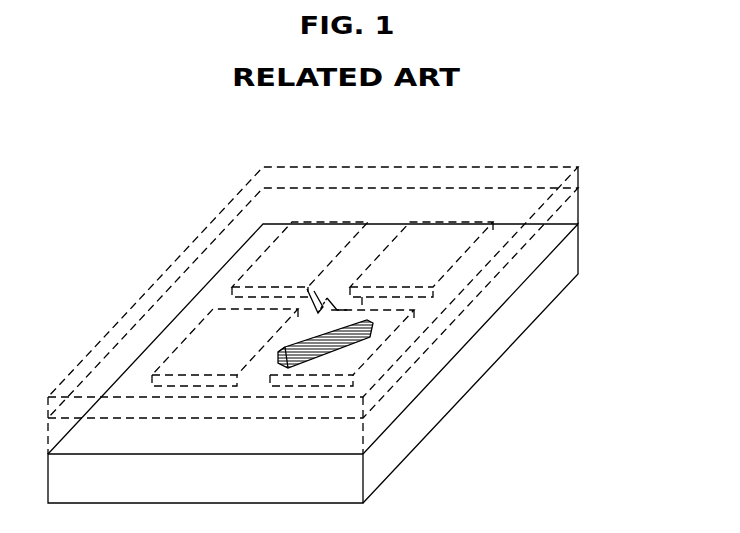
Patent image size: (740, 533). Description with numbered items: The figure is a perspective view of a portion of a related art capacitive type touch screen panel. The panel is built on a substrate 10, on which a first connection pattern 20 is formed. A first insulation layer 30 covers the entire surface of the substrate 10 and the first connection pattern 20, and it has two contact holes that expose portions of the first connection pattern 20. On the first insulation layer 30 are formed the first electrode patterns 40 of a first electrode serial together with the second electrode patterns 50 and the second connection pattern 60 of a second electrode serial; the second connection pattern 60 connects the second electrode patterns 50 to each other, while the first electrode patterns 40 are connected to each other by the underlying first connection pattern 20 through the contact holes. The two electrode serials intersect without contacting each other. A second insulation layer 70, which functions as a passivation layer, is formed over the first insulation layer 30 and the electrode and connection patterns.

The substrate 10 is at (572, 266).
The first connection pattern 20 is at (372, 335).
The first insulation layer 30 is at (578, 204).
The first electrode patterns 40 is at (205, 347).
The second electrode patterns 50 is at (285, 255).
The second connection pattern 60 is at (338, 286).
The second insulation layer 70 is at (580, 172).